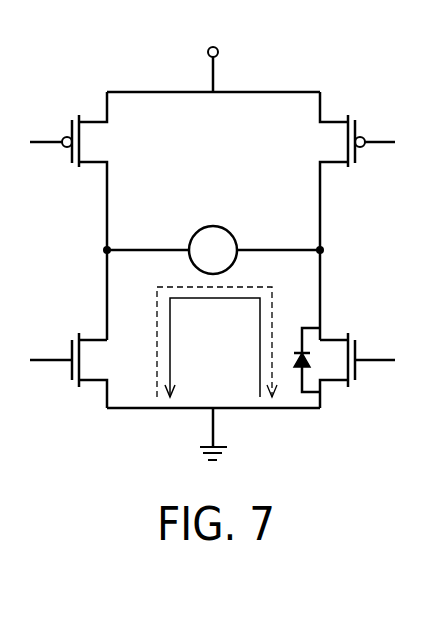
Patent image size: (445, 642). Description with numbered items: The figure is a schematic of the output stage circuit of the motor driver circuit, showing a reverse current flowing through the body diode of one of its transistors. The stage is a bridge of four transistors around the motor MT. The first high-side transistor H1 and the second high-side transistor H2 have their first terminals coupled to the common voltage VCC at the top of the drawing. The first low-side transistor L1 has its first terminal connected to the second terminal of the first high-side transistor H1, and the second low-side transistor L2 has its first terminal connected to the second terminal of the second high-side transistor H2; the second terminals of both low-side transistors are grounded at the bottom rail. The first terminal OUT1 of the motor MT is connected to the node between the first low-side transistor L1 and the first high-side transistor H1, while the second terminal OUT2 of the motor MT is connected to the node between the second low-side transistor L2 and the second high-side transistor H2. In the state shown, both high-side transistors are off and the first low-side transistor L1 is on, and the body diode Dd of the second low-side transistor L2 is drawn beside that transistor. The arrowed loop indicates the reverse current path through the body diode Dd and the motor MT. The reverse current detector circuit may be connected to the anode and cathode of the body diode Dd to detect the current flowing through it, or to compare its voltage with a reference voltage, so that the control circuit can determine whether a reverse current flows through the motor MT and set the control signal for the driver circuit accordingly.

The first high-side transistor H1 is at (70, 127).
The second high-side transistor H2 is at (357, 127).
The first low-side transistor L1 is at (68, 371).
The second low-side transistor L2 is at (357, 371).
The motor MT is at (212, 227).
The body diode Dd is at (298, 368).
The common voltage VCC is at (213, 55).
The first terminal of the motor OUT1 is at (113, 252).
The second terminal of the motor OUT2 is at (314, 252).